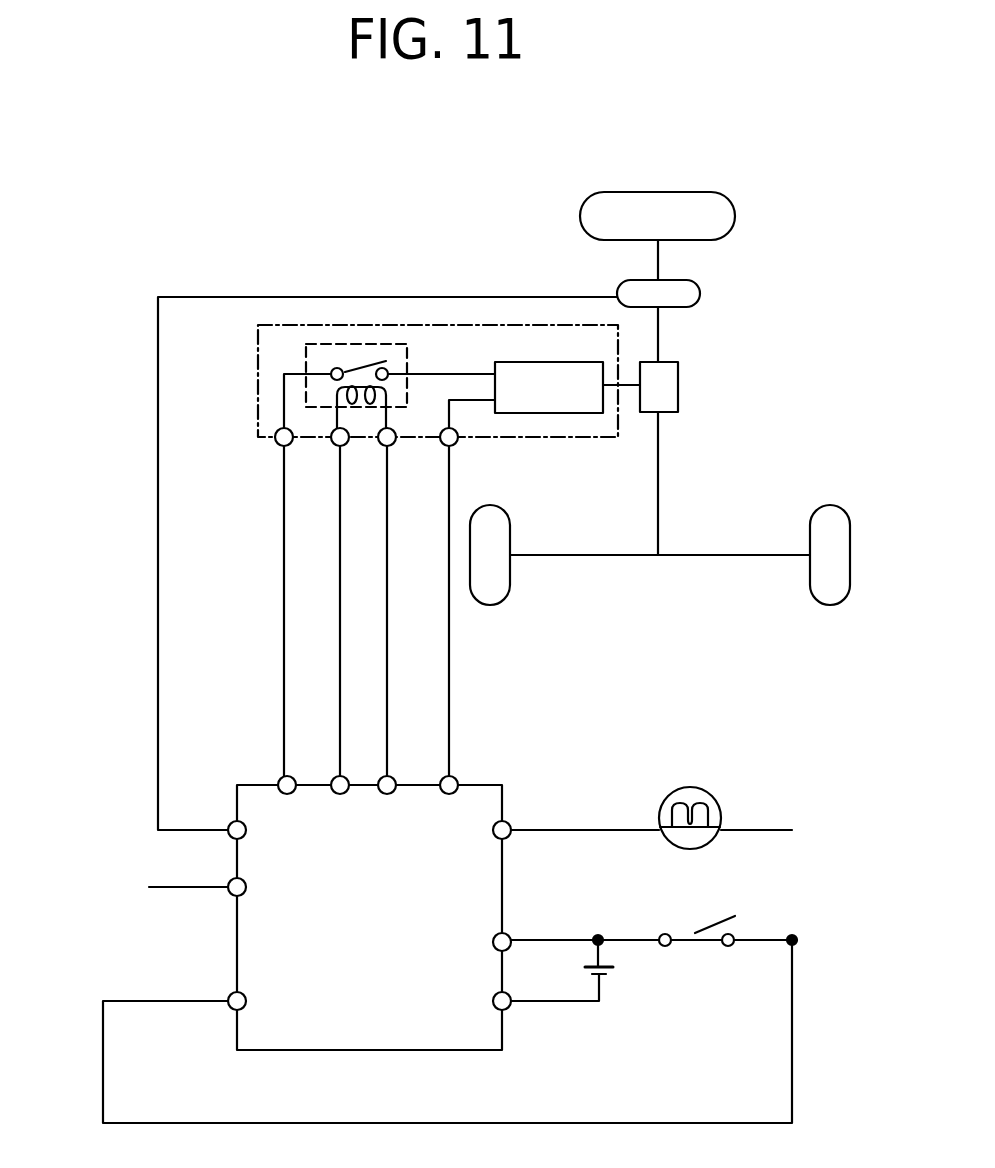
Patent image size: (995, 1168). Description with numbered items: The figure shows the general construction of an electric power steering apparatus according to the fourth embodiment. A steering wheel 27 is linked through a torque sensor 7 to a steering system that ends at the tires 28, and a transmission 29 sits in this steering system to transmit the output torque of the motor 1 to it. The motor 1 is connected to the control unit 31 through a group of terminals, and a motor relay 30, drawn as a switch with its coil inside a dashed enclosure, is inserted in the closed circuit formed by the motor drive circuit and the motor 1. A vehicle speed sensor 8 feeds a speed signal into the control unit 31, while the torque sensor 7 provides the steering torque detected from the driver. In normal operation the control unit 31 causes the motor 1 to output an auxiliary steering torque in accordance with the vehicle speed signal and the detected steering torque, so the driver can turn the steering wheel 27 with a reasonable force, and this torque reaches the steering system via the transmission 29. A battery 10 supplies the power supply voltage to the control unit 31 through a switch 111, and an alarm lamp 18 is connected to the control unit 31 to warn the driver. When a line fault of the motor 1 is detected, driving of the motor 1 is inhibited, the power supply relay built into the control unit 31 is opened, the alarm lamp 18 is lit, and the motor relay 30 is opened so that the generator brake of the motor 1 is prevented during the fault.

The steering wheel 27 is at (650, 198).
The torque sensor 7 is at (692, 292).
The transmission 29 is at (662, 386).
The tires 28 is at (498, 583).
The motor 1 is at (553, 400).
The motor relay 30 is at (358, 348).
The control unit 31 is at (369, 1036).
The vehicle speed sensor 8 is at (78, 846).
The alarm lamp 18 is at (686, 790).
The ignition switch 111 is at (697, 950).
The battery 10 is at (607, 977).